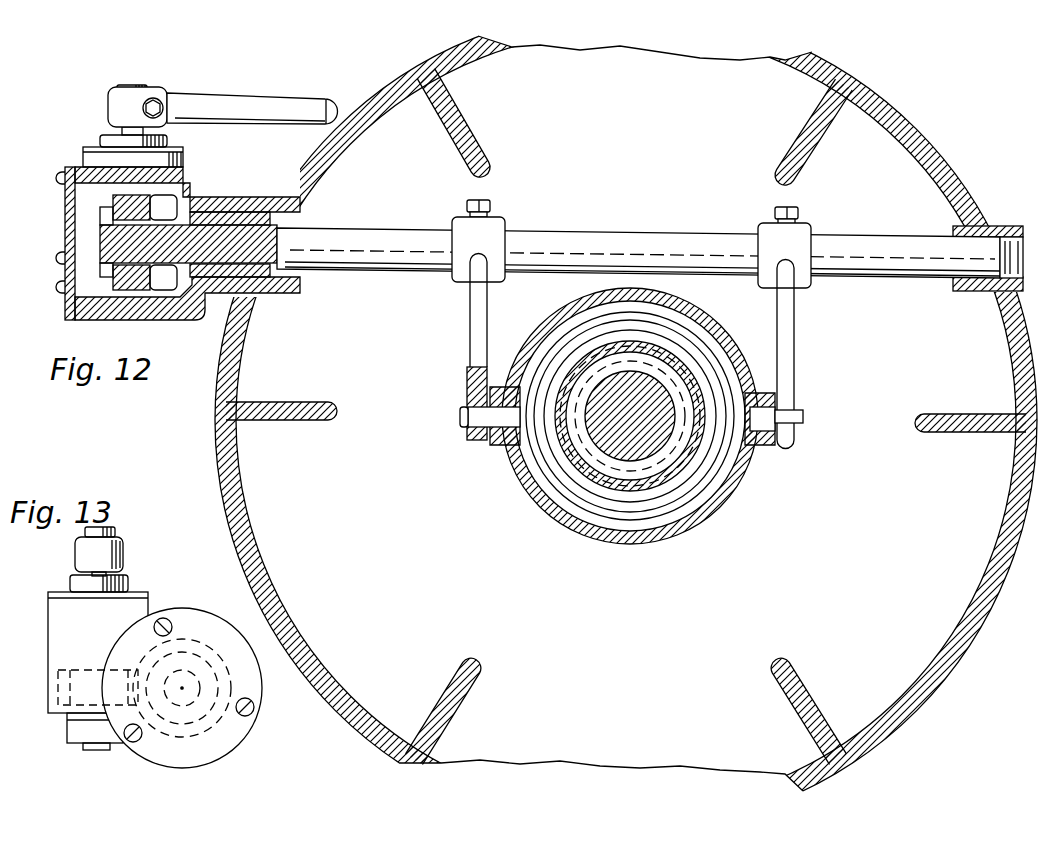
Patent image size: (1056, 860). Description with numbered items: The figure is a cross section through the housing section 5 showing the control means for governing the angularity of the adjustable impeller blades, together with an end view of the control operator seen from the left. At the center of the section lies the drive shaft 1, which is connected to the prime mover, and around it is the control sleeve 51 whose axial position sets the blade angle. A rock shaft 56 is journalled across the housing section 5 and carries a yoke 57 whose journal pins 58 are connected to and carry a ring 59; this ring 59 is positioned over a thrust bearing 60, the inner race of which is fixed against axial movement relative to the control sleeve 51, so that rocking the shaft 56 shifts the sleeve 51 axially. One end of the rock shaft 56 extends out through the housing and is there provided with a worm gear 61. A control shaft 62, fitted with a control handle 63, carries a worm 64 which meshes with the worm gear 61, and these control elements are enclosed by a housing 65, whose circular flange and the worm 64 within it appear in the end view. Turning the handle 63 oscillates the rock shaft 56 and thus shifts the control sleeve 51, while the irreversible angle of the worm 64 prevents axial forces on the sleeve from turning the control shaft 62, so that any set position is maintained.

In FIG. 12, the drive shaft 1 is at (653, 433).
In FIG. 12, the second housing section 5 is at (422, 72).
In FIG. 12, the control sleeve 51 is at (617, 473).
In FIG. 12, the rock shaft 56 is at (665, 233).
In FIG. 13, the rock shaft 56 is at (213, 690).
In FIG. 12, the yoke 57 is at (462, 322).
In FIG. 12, the journal pins 58 is at (495, 433).
In FIG. 12, the ring 59 is at (677, 540).
In FIG. 12, the thrust bearing 60 is at (635, 510).
In FIG. 12, the worm gear 61 is at (157, 310).
In FIG. 13, the worm gear 61 is at (211, 723).
In FIG. 12, the control shaft 62 is at (125, 86).
In FIG. 13, the control shaft 62 is at (110, 529).
In FIG. 12, the control handle 63 is at (268, 100).
In FIG. 13, the control handle 63 is at (76, 556).
In FIG. 13, the worm 64 is at (62, 698).
In FIG. 12, the housing 65 is at (66, 168).
In FIG. 13, the housing 65 is at (206, 612).